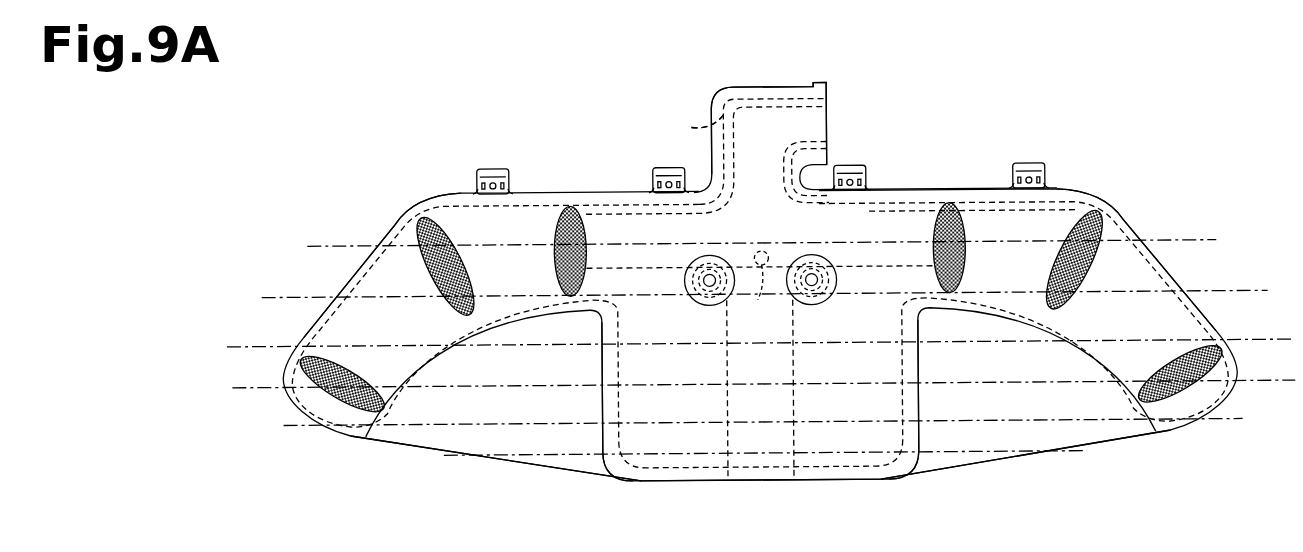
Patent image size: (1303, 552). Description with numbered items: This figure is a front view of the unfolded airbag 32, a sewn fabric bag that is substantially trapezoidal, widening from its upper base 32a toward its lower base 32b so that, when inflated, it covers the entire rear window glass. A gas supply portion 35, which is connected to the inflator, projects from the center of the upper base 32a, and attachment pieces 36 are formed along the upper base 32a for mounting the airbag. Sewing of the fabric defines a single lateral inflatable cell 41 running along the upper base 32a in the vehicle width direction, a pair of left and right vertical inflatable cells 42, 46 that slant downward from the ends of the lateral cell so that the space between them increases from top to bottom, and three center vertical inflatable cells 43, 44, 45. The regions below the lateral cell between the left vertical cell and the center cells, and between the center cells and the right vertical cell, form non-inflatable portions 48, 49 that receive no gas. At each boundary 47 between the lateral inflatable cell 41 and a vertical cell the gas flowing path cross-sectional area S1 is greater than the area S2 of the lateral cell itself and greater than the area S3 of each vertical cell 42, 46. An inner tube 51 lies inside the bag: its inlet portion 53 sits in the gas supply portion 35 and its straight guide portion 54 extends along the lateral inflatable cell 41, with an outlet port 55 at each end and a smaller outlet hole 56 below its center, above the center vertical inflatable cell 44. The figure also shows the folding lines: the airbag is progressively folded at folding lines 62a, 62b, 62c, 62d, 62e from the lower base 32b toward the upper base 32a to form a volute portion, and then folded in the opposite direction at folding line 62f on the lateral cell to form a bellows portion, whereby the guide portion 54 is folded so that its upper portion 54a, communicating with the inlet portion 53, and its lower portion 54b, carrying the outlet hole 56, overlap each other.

The airbag 32 is at (1193, 163).
The upper base 32a is at (897, 190).
The lower base 32b is at (770, 484).
The gas supply portion 35 is at (780, 95).
The attachment pieces 36 is at (491, 165).
The lateral inflatable cell 41 is at (760, 234).
The left vertical inflatable cell 42 is at (399, 375).
The center vertical inflatable cell 43 is at (694, 423).
The center vertical inflatable cell 44 is at (776, 423).
The center vertical inflatable cell 45 is at (866, 423).
The right vertical inflatable cell 46 is at (1155, 372).
The boundary 47 is at (434, 203).
The non-inflatable portion 48 is at (512, 420).
The non-inflatable portion 49 is at (1012, 425).
The inner tube 51 is at (633, 133).
The inlet portion 53 is at (679, 119).
The guide portion 54 is at (500, 276).
The upper portion 54a is at (557, 236).
The lower portion 54b is at (557, 264).
The outlet port 55 is at (966, 229).
The outlet hole 56 is at (760, 293).
The folding line 62a is at (462, 455).
The folding line 62b is at (298, 422).
The folding line 62c is at (243, 385).
The folding line 62d is at (236, 343).
The folding line 62e is at (279, 293).
The folding line 62f is at (322, 243).
The gas flowing path cross-sectional area at the boundary S1 is at (417, 224).
The gas flowing path cross-sectional area of the lateral inflatable cell S2 is at (557, 208).
The gas flowing path cross-sectional area of the vertical inflatable cell S3 is at (287, 367).